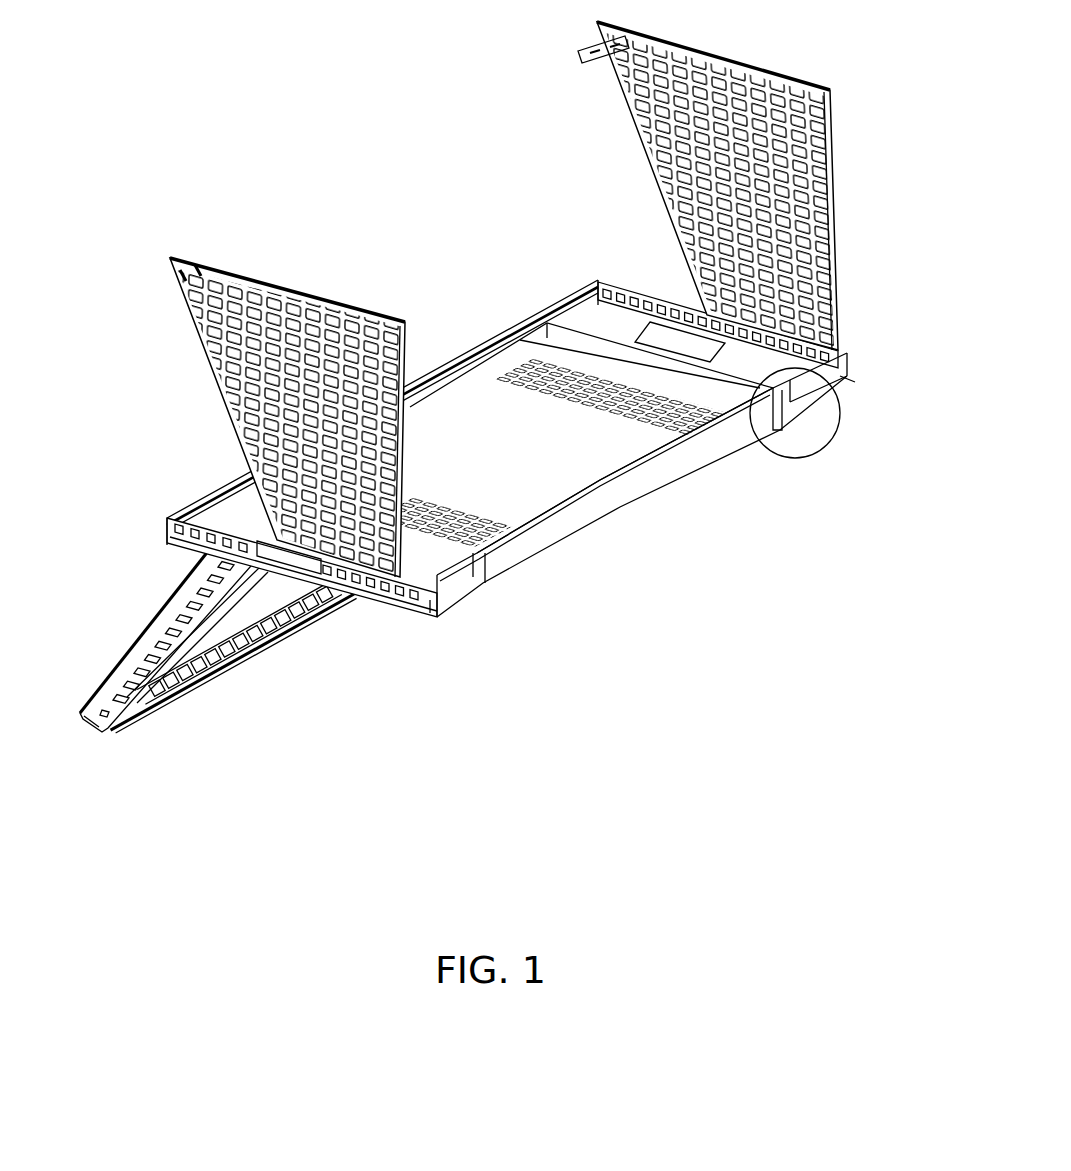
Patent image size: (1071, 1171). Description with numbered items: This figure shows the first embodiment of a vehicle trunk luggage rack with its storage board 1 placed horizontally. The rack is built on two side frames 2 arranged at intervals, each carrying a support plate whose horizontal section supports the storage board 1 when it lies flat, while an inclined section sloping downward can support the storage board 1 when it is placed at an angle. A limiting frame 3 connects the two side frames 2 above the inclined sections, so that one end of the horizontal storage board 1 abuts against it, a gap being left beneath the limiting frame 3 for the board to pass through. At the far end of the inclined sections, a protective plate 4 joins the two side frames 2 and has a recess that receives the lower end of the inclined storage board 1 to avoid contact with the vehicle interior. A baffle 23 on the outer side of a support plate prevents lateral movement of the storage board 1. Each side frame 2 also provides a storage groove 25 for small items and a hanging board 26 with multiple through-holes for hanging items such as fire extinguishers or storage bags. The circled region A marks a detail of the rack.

The storage board 1 is at (597, 512).
The side frame 2 is at (453, 587).
The limiting frame 3 is at (483, 327).
The protective plate 4 is at (241, 672).
The baffle 23 is at (130, 638).
The storage groove 25 is at (608, 307).
The hanging board 26 is at (845, 232).
The detail region A is at (838, 443).